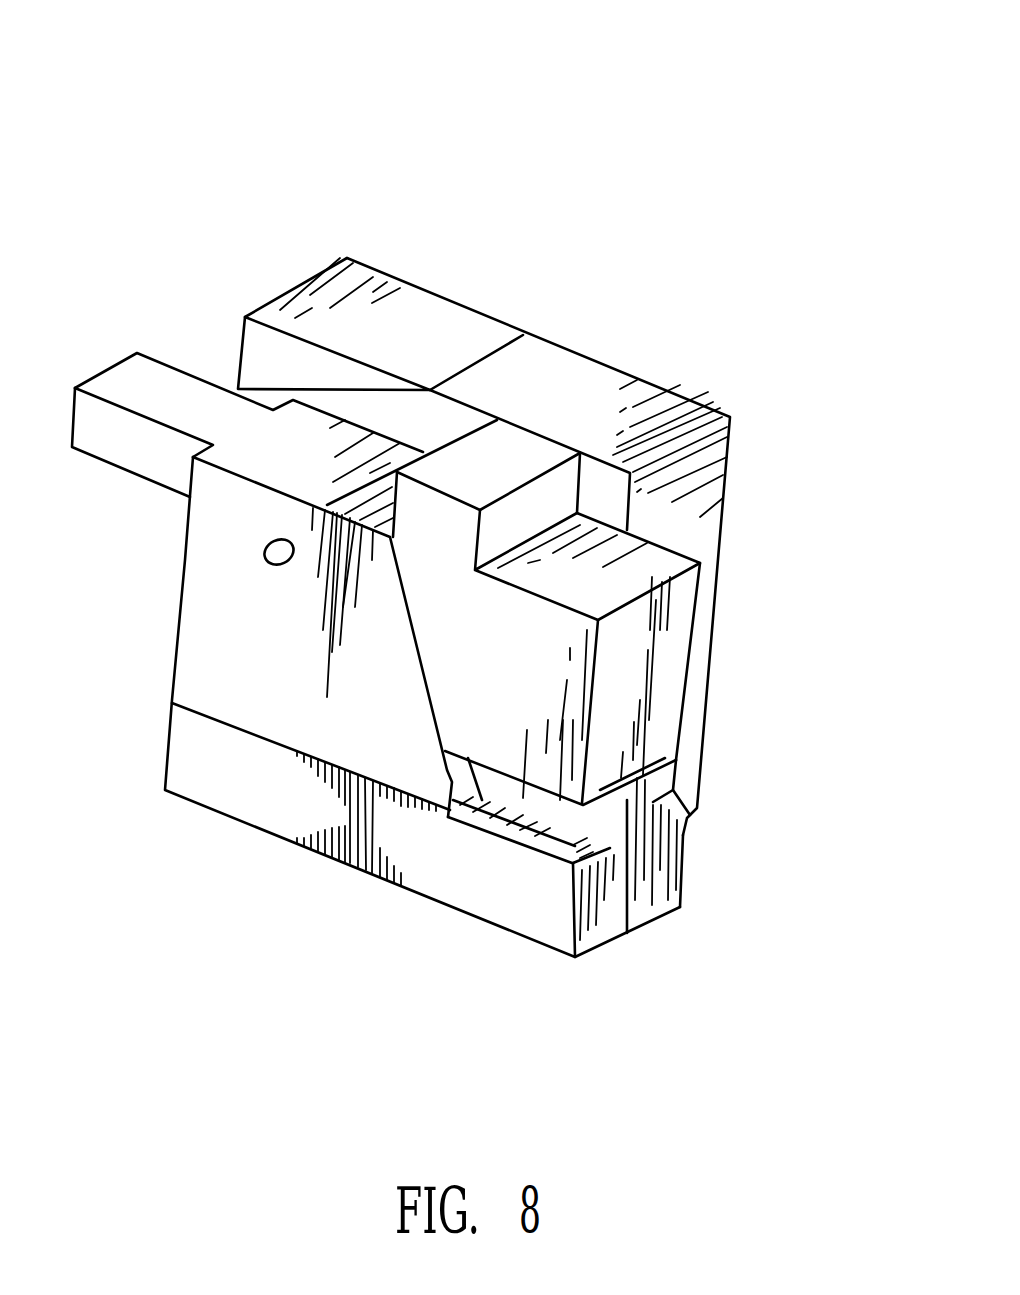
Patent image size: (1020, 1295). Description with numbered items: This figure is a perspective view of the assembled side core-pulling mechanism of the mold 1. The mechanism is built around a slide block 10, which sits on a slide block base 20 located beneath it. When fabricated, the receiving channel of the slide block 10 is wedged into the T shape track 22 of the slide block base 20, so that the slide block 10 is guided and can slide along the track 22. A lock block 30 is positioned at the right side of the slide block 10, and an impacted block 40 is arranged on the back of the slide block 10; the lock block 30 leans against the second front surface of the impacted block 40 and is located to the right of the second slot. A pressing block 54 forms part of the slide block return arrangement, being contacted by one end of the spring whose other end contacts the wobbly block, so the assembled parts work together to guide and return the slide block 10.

The mold 1 is at (63, 79).
The slide block 10 is at (218, 627).
The slide block base 20 is at (630, 902).
The T shape track 22 is at (638, 800).
The lock block 30 is at (640, 672).
The impacted block 40 is at (710, 500).
The pressing block 54 is at (297, 308).